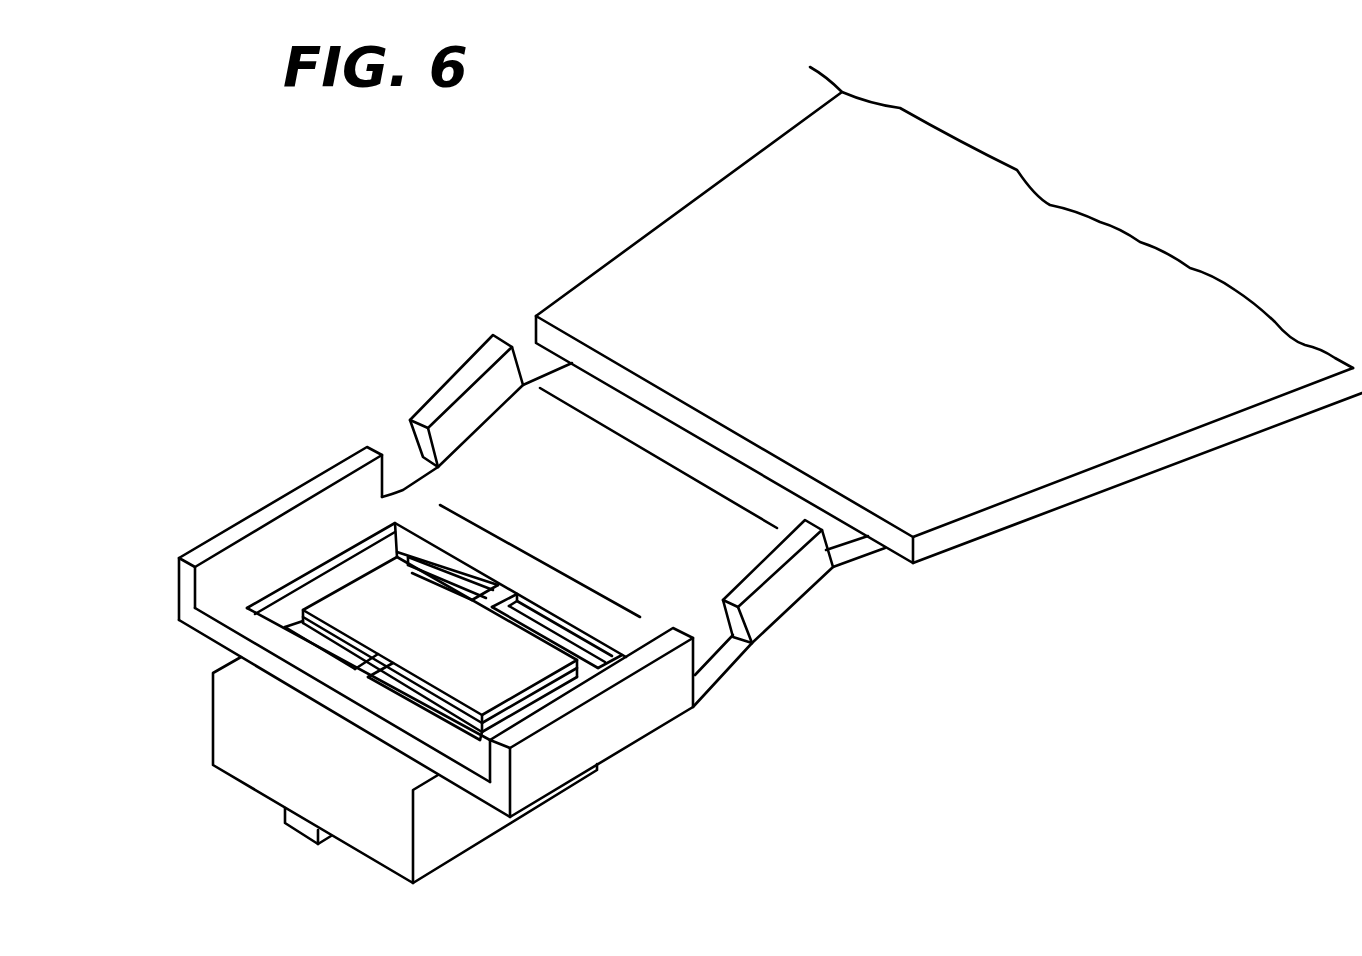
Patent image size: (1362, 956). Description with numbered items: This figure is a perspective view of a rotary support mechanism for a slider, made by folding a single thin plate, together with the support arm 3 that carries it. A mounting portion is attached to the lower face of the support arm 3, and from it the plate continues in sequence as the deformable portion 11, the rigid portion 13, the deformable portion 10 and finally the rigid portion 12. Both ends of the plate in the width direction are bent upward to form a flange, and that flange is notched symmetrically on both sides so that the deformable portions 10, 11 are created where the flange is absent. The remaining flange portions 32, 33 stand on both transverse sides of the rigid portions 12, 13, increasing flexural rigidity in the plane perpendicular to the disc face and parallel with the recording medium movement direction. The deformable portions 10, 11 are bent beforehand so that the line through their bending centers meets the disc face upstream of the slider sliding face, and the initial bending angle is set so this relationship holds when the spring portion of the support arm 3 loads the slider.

The support arm 3 is at (1033, 463).
The deformable portion 10 is at (549, 500).
The deformable portion 11 is at (672, 445).
The rigid portion 12 is at (734, 733).
The rigid portion 13 is at (600, 445).
The flange portion 32 is at (263, 548).
The flange portion 33 is at (470, 405).